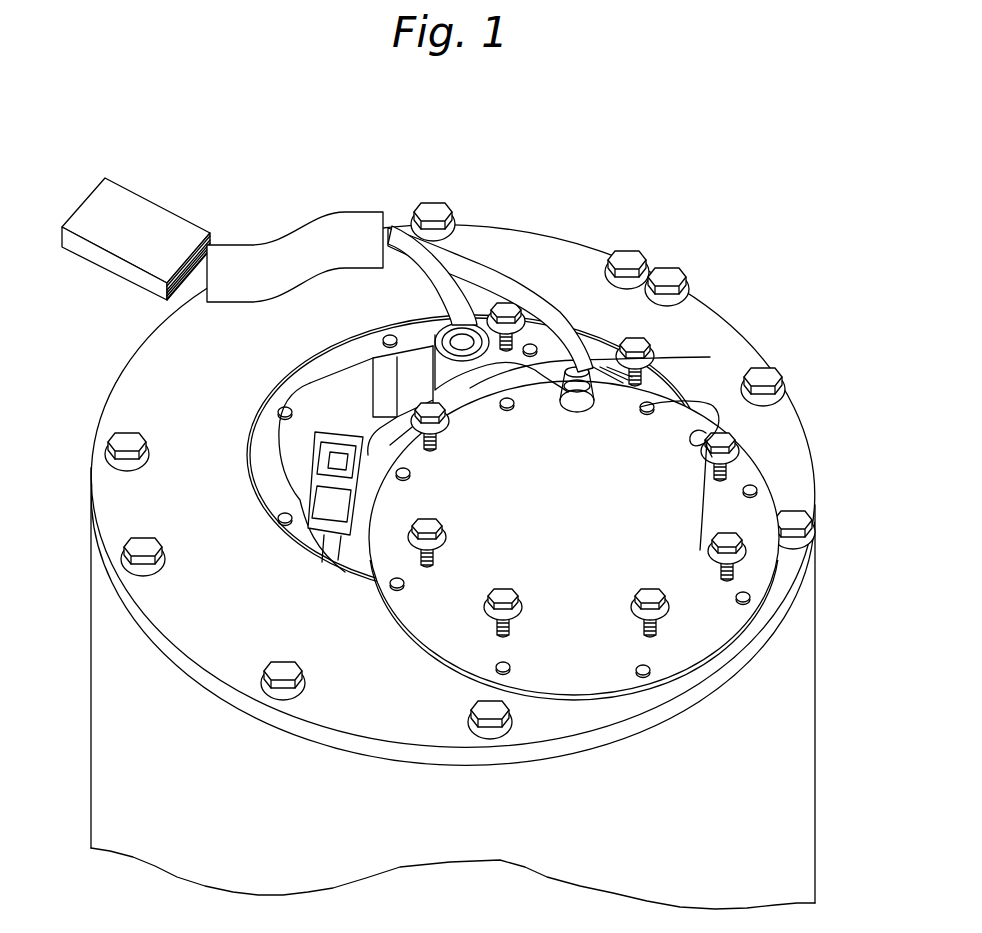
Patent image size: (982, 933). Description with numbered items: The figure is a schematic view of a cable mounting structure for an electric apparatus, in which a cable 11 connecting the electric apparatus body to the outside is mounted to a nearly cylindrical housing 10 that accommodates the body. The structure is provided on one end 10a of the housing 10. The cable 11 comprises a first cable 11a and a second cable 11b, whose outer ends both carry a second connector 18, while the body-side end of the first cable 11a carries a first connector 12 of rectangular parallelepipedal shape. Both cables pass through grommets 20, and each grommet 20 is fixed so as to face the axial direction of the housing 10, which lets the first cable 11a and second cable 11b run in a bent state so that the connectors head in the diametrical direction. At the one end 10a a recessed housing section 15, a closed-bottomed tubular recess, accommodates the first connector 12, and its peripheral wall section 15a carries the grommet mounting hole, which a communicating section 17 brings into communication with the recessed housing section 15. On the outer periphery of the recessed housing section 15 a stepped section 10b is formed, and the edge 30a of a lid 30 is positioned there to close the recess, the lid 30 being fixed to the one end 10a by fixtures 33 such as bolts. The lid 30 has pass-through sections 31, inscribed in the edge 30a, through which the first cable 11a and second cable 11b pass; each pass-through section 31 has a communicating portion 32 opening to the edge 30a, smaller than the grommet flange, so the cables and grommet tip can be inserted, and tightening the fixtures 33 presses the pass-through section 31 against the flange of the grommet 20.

The housing 10 is at (88, 577).
The one end of the housing 10a is at (727, 330).
The stepped section 10b is at (252, 442).
The cable 11 is at (490, 234).
The first cable 11a is at (462, 293).
The second cable 11b is at (500, 273).
The first connector 12 is at (320, 500).
The recessed housing section 15 is at (398, 397).
The peripheral wall section 15a is at (352, 385).
The communicating section 17 is at (420, 258).
The second connector 18 is at (102, 207).
The grommet 20 is at (455, 333).
The lid 30 is at (614, 524).
The edge of the lid 30a is at (773, 500).
The pass-through section 31 is at (582, 400).
The communicating portion 32 is at (710, 357).
The fixture 33 is at (743, 555).